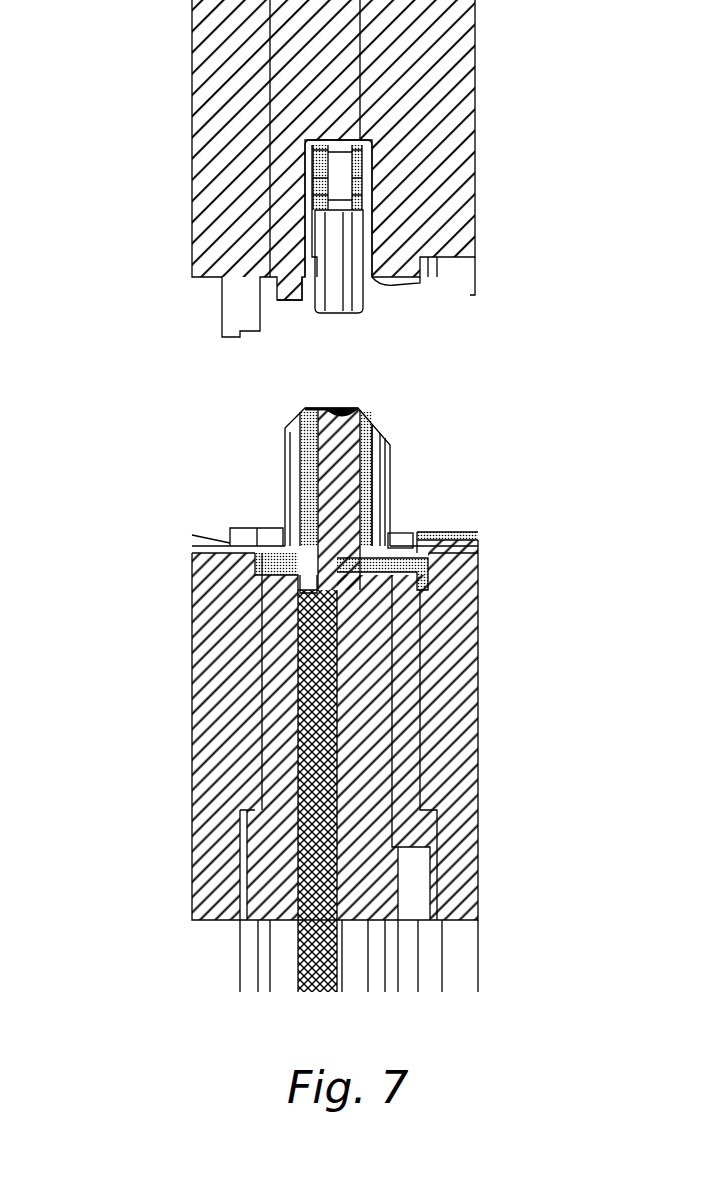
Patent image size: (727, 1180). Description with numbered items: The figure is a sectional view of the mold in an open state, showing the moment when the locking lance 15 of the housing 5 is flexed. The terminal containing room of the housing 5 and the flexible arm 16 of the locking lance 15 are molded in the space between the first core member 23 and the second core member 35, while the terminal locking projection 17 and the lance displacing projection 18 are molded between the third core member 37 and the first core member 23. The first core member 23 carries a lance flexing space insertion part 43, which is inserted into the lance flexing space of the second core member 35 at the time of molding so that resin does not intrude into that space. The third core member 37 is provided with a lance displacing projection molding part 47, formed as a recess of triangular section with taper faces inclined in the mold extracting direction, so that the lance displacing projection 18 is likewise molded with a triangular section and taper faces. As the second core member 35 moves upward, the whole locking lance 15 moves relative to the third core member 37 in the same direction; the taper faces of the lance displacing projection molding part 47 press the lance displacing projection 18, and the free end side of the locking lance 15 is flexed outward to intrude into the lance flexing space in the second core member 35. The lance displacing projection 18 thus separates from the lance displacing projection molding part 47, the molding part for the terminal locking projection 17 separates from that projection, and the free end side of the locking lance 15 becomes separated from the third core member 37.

The first core member 23 is at (220, 90).
The lance flexing space insertion part 43 is at (295, 300).
The locking lance 15 is at (357, 409).
The flexible arm 16 is at (307, 448).
The terminal locking projection 17 is at (376, 545).
The housing 5 is at (458, 530).
The lance displacing projection 18 is at (345, 590).
The lance displacing projection molding part 47 is at (293, 603).
The second core member 35 is at (222, 775).
The third core member 37 is at (345, 768).